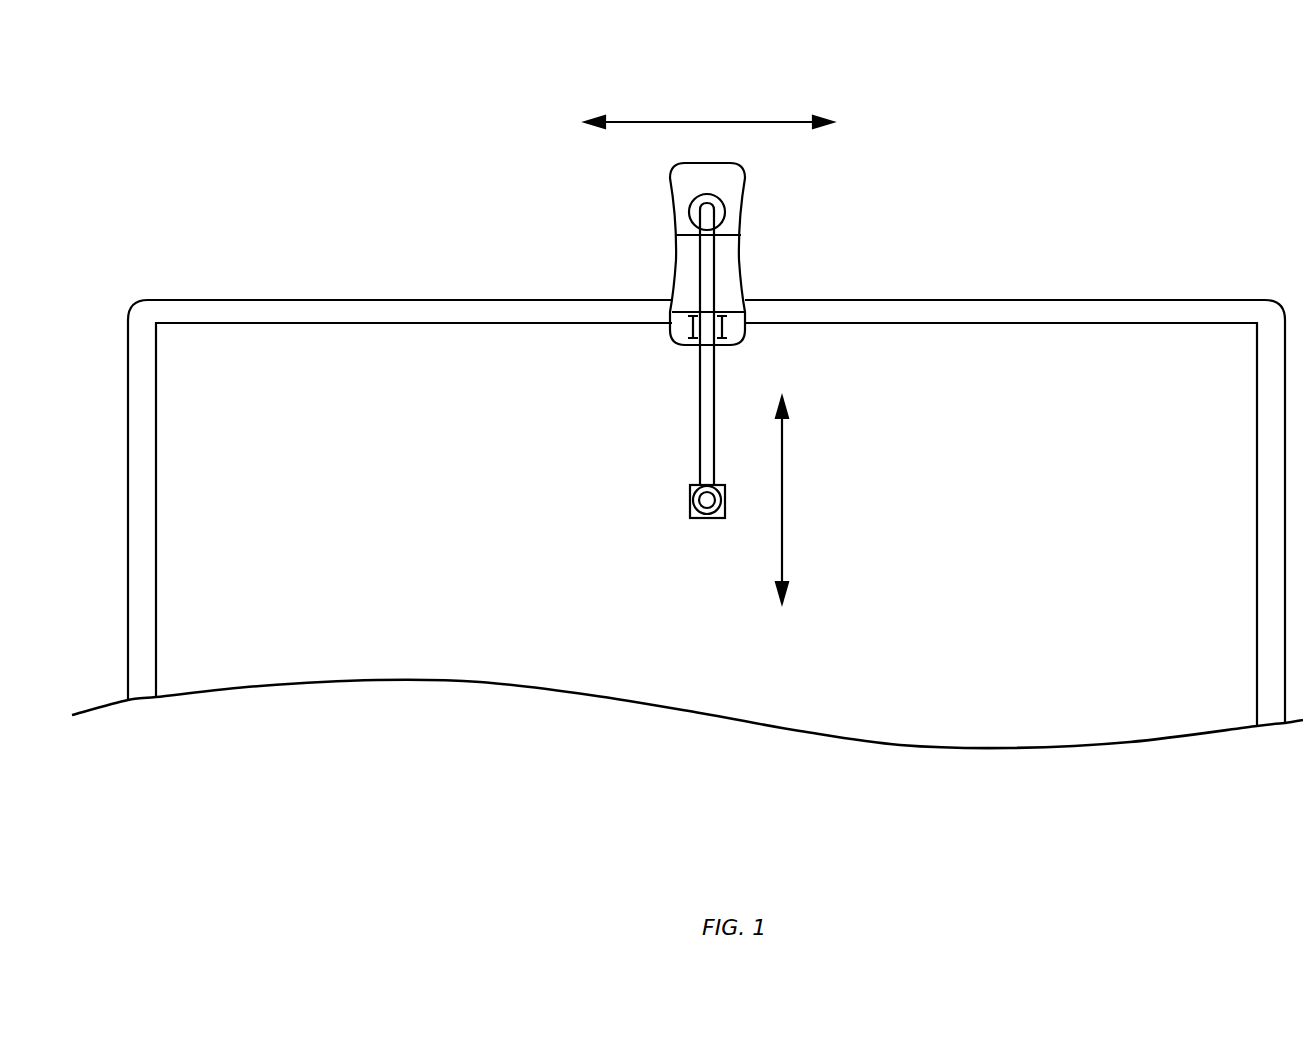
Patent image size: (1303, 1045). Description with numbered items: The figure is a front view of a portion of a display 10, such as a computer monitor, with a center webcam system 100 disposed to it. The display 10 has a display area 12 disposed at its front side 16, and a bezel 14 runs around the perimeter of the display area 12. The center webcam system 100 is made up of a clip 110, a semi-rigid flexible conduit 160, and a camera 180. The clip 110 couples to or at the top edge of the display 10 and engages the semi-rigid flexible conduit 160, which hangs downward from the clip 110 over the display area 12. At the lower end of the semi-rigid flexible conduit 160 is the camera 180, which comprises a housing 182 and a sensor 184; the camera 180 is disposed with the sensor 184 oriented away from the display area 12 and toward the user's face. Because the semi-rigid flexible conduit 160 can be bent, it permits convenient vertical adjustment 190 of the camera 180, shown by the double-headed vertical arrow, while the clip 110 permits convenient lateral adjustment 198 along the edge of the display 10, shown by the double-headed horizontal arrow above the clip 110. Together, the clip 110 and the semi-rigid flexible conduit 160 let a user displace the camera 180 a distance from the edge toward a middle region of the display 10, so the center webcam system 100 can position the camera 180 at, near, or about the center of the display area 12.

The display 10 is at (1185, 262).
The display area 12 is at (956, 571).
The bezel 14 is at (915, 312).
The front side 16 is at (436, 391).
The center webcam system 100 is at (98, 128).
The clip 110 is at (672, 236).
The semi-rigid flexible conduit 160 is at (698, 412).
The camera 180 is at (690, 490).
The housing 182 is at (690, 506).
The sensor 184 is at (710, 512).
The vertical adjustment 190 is at (785, 497).
The lateral adjustment 198 is at (733, 120).